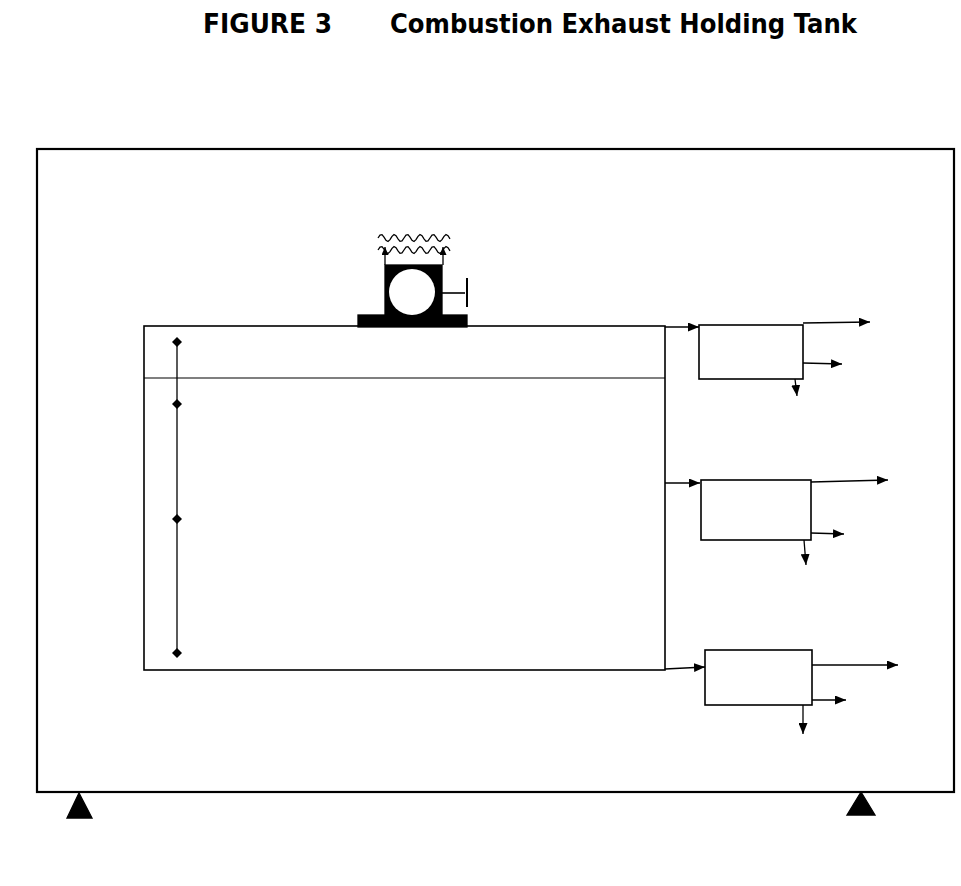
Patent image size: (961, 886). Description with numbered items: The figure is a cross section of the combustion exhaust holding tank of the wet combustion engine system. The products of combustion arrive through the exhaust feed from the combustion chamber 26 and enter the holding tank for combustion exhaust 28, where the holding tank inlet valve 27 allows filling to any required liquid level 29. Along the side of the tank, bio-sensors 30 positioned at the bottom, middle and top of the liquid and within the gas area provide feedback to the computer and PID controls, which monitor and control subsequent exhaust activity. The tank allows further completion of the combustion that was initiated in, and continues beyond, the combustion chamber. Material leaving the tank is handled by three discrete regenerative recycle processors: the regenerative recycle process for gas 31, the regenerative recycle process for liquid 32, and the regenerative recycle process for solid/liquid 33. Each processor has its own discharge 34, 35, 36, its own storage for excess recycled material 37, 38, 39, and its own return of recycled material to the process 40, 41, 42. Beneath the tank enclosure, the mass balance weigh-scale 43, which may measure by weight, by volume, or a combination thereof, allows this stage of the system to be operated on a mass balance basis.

The exhaust feed from combustion chamber 26 is at (415, 234).
The holding tank inlet valve 27 is at (449, 269).
The holding tank for combustion exhaust 28 is at (280, 637).
The liquid level 29 is at (257, 378).
The bio-sensors 30 is at (177, 342).
The regenerative recycle process—gas 31 is at (734, 352).
The regenerative recycle process—liquid 32 is at (738, 510).
The regenerative recycle process—solid/liquid 33 is at (738, 677).
The discharge from regenerative recycle process—gas 34 is at (800, 410).
The discharge from regenerative recycle process—liquid 35 is at (812, 575).
The discharge from regenerative recycle process—solid/liquid 36 is at (801, 742).
The storage for excess recycled regenerative recycle process—gas 37 is at (848, 365).
The storage for excess recycled regenerative recycle process—liquid 38 is at (853, 535).
The storage for excess recycled regenerative recycle process—solid/liquid 39 is at (855, 699).
The return of recycled proportional regenerative process—gas 40 is at (863, 320).
The return of recycled proportional regenerative process—liquid 41 is at (876, 477).
The return of recycled proportional regenerative process—solid/liquid 42 is at (881, 667).
The mass balance weigh-scale 43 is at (94, 817).